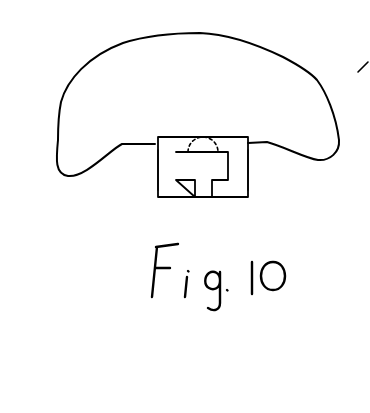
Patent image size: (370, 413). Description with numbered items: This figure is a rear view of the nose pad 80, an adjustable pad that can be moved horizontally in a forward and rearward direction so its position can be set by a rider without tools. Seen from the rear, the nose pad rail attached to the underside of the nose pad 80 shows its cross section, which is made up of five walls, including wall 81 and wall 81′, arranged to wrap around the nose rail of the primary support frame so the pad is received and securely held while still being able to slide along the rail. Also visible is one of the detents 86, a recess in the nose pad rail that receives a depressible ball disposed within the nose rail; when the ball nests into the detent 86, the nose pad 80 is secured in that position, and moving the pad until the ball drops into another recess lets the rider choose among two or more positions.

The nose pad 80 is at (96, 190).
The wall 81 is at (248, 177).
The wall 81′ is at (158, 168).
The detent 86 is at (205, 142).